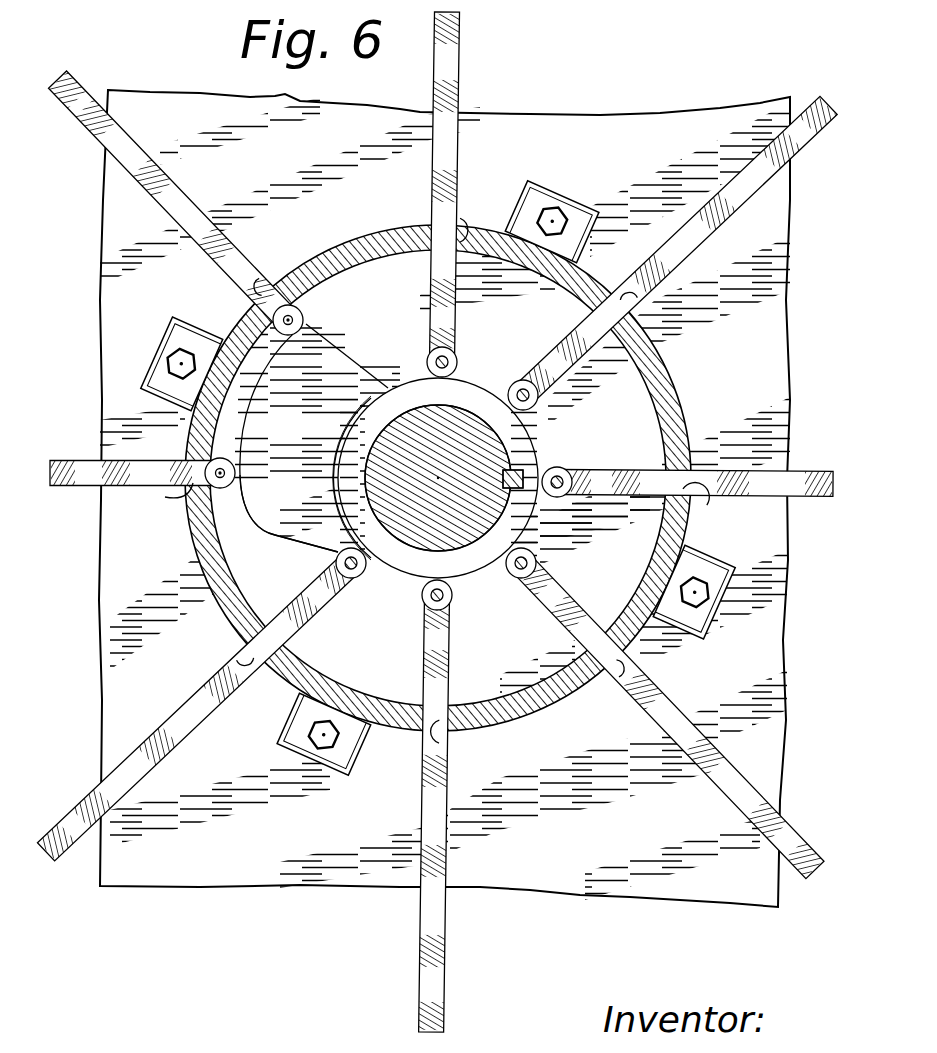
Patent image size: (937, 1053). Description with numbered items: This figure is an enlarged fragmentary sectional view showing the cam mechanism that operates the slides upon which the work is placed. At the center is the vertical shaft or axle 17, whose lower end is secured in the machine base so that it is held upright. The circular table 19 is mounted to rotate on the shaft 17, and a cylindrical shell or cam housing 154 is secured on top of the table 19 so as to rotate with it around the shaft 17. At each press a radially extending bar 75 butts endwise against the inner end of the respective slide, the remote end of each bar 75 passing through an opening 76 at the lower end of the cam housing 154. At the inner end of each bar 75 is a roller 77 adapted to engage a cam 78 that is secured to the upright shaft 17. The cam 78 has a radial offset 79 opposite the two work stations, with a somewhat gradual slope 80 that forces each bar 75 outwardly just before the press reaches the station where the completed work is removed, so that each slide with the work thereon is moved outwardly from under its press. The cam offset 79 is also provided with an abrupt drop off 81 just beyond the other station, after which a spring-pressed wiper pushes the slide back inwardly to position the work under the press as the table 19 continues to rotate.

The shaft or axle 17 is at (463, 423).
The circular table 19 is at (222, 870).
The radially extending bar 75 is at (455, 168).
The opening 76 is at (453, 223).
The roller 77 is at (304, 315).
The cam 78 is at (477, 573).
The radial offset 79 is at (305, 447).
The gradual slope 80 is at (295, 537).
The abrupt drop off 81 is at (355, 355).
The cylindrical shell or cam housing 154 is at (556, 700).